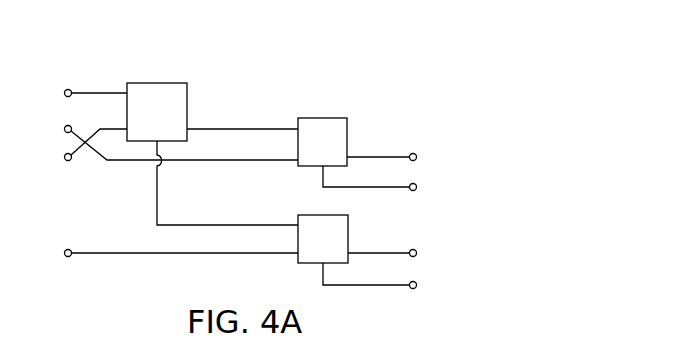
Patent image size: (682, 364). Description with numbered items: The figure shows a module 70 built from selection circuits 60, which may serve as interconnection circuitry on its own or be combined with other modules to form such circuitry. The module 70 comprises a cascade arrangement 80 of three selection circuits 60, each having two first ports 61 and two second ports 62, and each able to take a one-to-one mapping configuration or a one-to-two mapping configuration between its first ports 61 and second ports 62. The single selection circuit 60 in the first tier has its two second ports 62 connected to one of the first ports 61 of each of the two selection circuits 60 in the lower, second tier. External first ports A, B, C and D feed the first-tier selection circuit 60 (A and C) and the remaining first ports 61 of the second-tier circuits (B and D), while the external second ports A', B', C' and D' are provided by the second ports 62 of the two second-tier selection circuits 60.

The selection circuit 60 is at (163, 83).
The first ports 61 is at (127, 92).
The second ports 62 is at (187, 129).
The module 70 is at (470, 63).
The cascade arrangement 80 is at (302, 61).